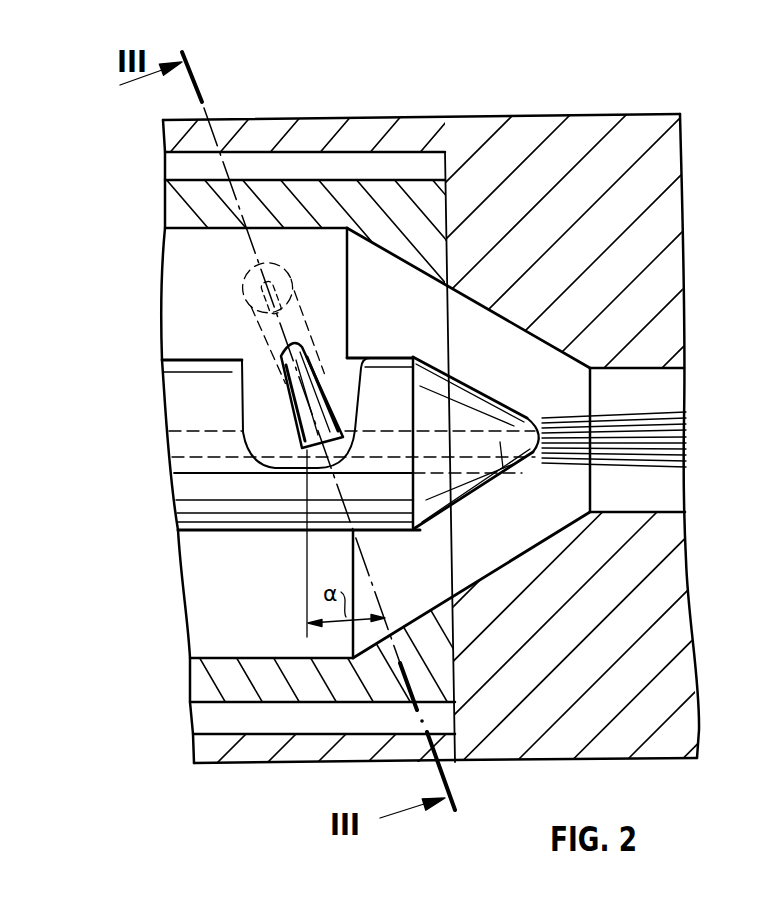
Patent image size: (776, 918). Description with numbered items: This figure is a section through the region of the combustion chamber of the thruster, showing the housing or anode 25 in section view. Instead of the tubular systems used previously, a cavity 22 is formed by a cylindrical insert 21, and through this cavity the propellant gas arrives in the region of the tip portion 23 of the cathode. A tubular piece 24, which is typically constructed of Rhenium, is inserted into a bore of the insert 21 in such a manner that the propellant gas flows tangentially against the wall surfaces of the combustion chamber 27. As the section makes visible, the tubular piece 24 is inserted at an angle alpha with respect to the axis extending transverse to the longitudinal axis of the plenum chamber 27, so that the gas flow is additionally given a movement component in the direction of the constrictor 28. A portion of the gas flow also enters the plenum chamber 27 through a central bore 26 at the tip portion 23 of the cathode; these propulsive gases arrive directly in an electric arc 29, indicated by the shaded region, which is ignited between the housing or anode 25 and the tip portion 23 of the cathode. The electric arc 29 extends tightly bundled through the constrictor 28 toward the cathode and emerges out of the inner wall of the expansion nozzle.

The cylindrical insert 21 is at (422, 190).
The cavity 22 is at (362, 164).
The tip portion of the cathode 23 is at (473, 402).
The tubular piece 24 is at (338, 422).
The housing or anode 25 is at (571, 138).
The central bore 26 is at (500, 450).
The combustion chamber (plenum chamber) 27 is at (368, 285).
The constrictor 28 is at (670, 383).
The electric arc 29 is at (678, 446).